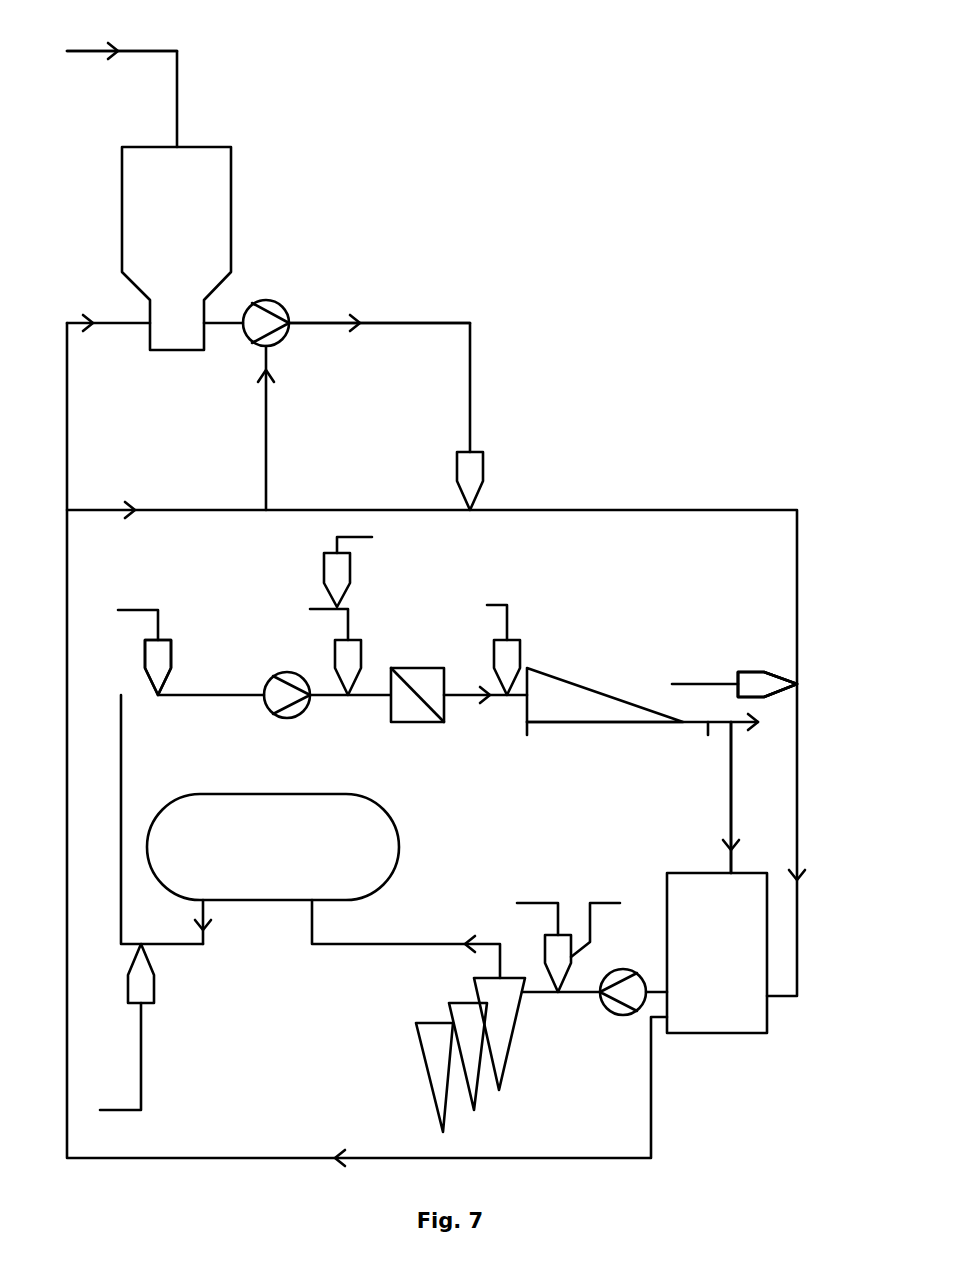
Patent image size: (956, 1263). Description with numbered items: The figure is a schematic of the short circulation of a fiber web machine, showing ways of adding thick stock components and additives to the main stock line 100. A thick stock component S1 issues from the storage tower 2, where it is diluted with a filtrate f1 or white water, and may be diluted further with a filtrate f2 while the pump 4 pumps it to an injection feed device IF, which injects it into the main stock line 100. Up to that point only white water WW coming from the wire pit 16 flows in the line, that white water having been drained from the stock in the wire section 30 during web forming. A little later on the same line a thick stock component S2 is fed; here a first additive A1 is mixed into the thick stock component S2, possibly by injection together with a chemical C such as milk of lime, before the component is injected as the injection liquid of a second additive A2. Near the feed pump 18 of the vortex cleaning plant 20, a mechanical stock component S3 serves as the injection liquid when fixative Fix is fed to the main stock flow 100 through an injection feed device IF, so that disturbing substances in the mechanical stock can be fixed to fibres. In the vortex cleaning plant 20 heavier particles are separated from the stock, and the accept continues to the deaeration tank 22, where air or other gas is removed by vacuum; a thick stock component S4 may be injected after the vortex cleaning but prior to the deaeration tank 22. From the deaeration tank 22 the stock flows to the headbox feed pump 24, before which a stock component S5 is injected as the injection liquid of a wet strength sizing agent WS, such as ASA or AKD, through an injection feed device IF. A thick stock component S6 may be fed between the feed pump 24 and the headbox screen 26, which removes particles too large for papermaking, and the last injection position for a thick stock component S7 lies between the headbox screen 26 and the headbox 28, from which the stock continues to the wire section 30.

The main stock line 100 is at (692, 510).
The storage tower 2 is at (176, 248).
The pump 4 is at (266, 300).
The wire pit 16 is at (717, 953).
The feed pump 18 is at (607, 985).
The vortex cleaning plant 20 is at (498, 1058).
The deaeration tank 22 is at (372, 830).
The feed pump 24 is at (288, 717).
The headbox screen 26 is at (393, 705).
The headbox 28 is at (594, 719).
The wire section 30 is at (706, 746).
The thick stock component S1 is at (268, 164).
The thick stock component S2 is at (695, 668).
The mechanical stock component S3 is at (543, 933).
The thick stock component S4 is at (118, 1056).
The stock component S5 is at (121, 620).
The thick stock component S6 is at (311, 619).
The thick stock component S7 is at (481, 617).
The filtrate f1 is at (95, 330).
The filtrate f2 is at (266, 400).
The injection feed device IF is at (473, 478).
The wet strength sizing agent WS is at (172, 645).
The white water WW is at (728, 815).
The chemical C is at (360, 566).
The first additive A1 is at (708, 680).
The second additive A2 is at (756, 673).
The fixative Fix is at (597, 915).